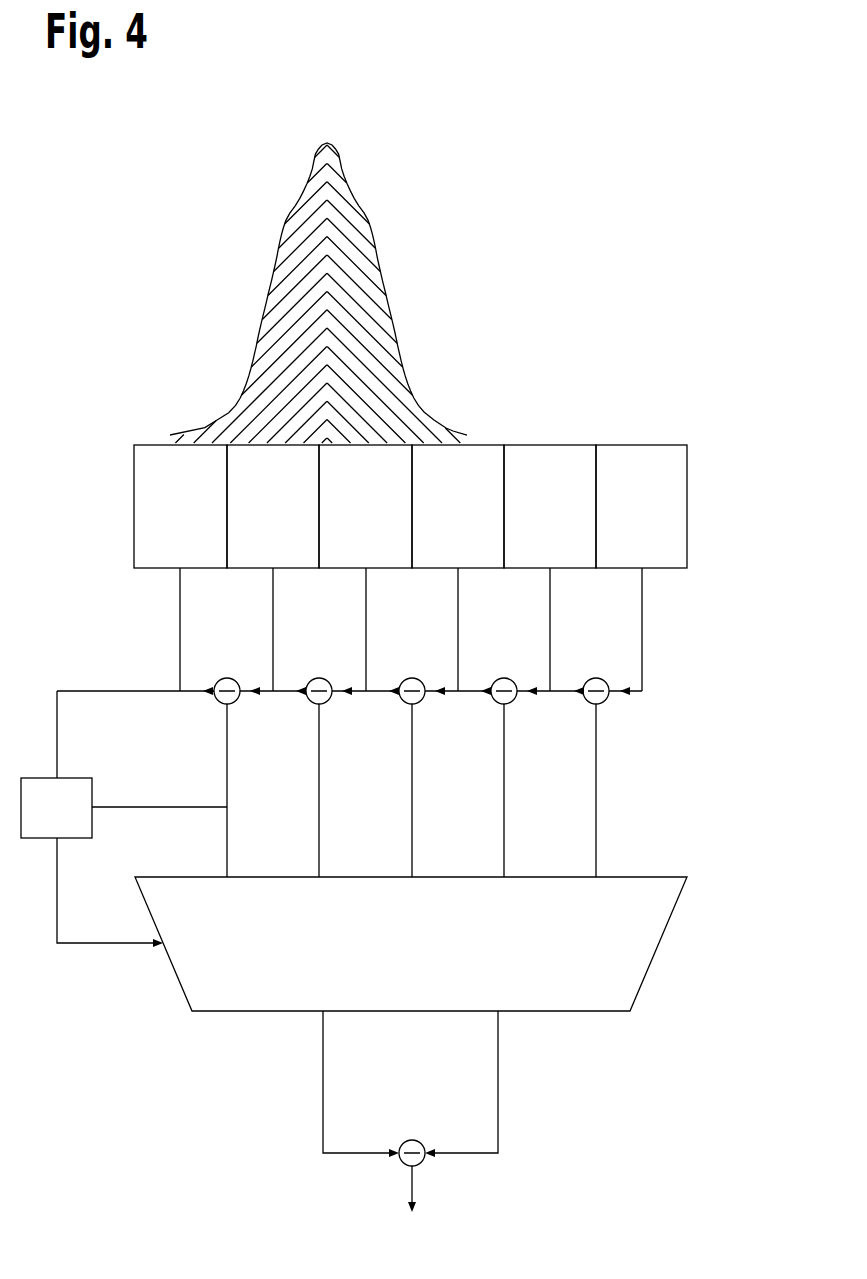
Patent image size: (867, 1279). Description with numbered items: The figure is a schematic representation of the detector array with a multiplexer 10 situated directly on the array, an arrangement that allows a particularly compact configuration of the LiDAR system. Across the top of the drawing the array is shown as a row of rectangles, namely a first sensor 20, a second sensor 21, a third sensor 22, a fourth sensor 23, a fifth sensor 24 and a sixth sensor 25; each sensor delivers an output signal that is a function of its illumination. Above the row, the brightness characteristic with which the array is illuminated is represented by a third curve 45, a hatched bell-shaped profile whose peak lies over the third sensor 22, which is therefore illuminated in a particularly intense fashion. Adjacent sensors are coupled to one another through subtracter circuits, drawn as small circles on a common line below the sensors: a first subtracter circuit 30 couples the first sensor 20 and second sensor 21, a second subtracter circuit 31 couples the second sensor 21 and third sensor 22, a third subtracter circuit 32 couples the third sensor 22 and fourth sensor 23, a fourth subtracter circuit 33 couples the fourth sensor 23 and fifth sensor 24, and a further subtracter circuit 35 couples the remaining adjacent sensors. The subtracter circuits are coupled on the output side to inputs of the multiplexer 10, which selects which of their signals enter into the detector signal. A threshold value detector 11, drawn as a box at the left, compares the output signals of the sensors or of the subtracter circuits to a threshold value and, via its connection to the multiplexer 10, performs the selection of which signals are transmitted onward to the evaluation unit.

The multiplexer 10 is at (660, 943).
The threshold value detector 11 is at (33, 839).
The first sensor 20 is at (152, 569).
The second sensor 21 is at (243, 569).
The third sensor 22 is at (336, 569).
The fourth sensor 23 is at (428, 569).
The fifth sensor 24 is at (518, 569).
The sixth sensor 25 is at (610, 569).
The first subtracter circuit 30 is at (218, 703).
The second subtracter circuit 31 is at (310, 703).
The third subtracter circuit 32 is at (403, 703).
The fourth subtracter circuit 33 is at (495, 703).
The subtracter circuit 35 is at (587, 703).
The third curve 45 is at (238, 181).